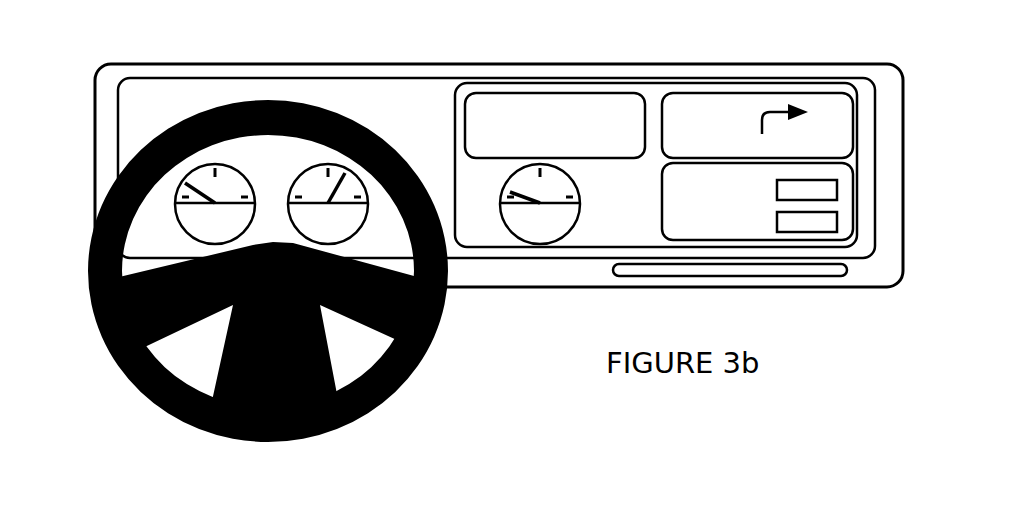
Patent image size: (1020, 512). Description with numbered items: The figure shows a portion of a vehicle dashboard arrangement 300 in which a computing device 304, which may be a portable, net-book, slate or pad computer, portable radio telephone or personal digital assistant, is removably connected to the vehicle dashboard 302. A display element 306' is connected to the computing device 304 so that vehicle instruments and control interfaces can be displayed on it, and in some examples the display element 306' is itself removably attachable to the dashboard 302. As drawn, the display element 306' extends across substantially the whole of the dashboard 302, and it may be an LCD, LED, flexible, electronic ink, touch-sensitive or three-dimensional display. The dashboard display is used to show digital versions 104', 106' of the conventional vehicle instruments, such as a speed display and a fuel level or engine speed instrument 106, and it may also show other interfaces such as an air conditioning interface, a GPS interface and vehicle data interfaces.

The vehicle dashboard arrangement 300 is at (603, 33).
The vehicle dashboard 302 is at (197, 63).
The computing device 304 is at (700, 276).
The display element 306' is at (656, 141).
The digital version of vehicle instrument 104' is at (216, 193).
The digital version of vehicle instrument 106' is at (328, 193).
The vehicle instrument 106 is at (289, 271).